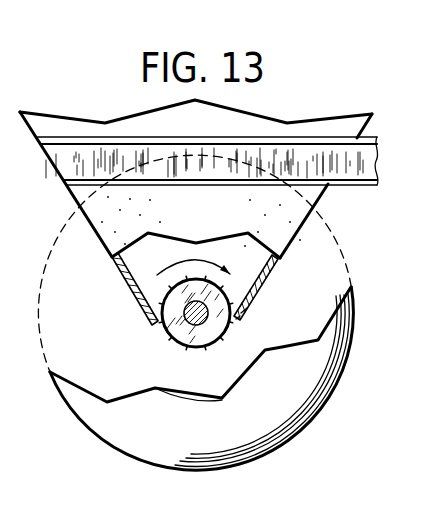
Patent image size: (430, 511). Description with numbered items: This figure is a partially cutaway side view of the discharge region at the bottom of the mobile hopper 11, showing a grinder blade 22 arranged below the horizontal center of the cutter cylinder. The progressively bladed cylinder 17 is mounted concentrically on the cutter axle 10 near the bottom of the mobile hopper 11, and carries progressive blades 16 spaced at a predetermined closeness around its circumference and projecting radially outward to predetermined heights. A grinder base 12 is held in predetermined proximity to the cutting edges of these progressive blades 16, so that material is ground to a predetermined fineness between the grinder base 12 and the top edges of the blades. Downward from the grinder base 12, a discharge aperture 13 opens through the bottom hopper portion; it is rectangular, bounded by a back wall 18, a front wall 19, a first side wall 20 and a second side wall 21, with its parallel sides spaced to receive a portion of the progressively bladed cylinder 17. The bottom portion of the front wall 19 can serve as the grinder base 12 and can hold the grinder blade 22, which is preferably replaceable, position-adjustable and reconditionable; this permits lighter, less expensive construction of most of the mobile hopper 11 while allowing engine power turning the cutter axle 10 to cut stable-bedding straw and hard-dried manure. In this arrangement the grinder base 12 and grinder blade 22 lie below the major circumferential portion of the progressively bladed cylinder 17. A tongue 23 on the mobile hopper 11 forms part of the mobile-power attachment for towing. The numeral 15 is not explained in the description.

The cutter axle 10 is at (207, 317).
The mobile hopper 11 is at (375, 88).
The grinder base 12 is at (232, 316).
The discharge aperture 13 is at (152, 338).
The blade outer edge 15 is at (295, 436).
The progressive blades 16 is at (247, 308).
The progressively bladed cylinder 17 is at (197, 350).
The back wall 18 is at (108, 262).
The front wall 19 is at (275, 262).
The first side wall 20 is at (115, 205).
The second side wall 21 is at (223, 256).
The grinder blade 22 is at (240, 316).
The tongue 23 is at (362, 167).